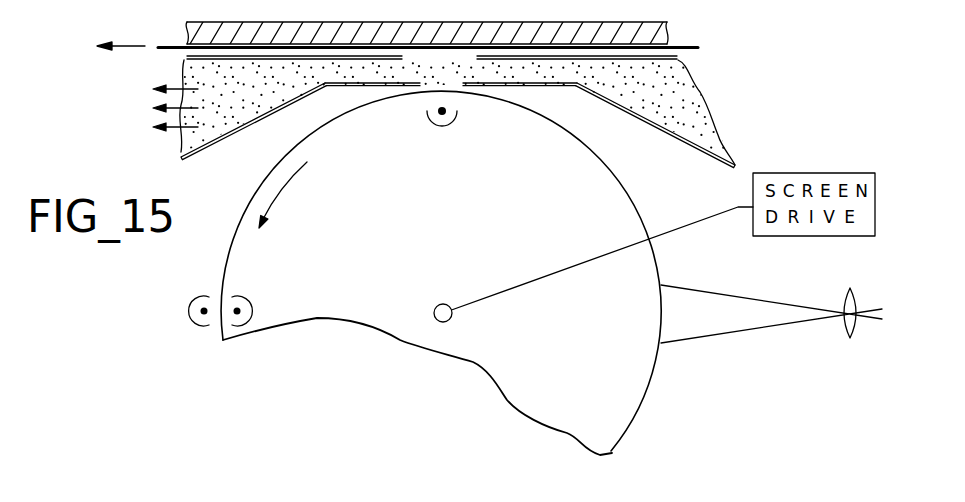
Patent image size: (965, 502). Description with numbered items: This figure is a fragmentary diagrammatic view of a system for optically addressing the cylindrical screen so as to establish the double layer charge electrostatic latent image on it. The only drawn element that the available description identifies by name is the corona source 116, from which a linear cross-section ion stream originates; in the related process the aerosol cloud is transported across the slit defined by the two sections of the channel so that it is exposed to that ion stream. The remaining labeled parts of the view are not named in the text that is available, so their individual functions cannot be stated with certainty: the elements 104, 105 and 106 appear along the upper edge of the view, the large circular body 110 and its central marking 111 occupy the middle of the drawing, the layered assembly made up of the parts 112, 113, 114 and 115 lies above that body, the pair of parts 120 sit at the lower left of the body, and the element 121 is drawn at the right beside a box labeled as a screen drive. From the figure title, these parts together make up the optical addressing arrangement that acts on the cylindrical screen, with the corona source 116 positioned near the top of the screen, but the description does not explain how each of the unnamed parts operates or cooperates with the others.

The light source 104 is at (140, 5).
The reflector 105 is at (307, 5).
The condenser 106 is at (423, 1).
The screen 110 is at (643, 221).
The screen axis 111 is at (516, 270).
The transparent plate 112 is at (650, 32).
The film strip 113 is at (698, 48).
The light diffusing layer 114 is at (195, 57).
The plate 115 is at (202, 140).
The corona source 116 is at (442, 126).
The guide rollers 120 is at (190, 300).
The lens 121 is at (850, 288).